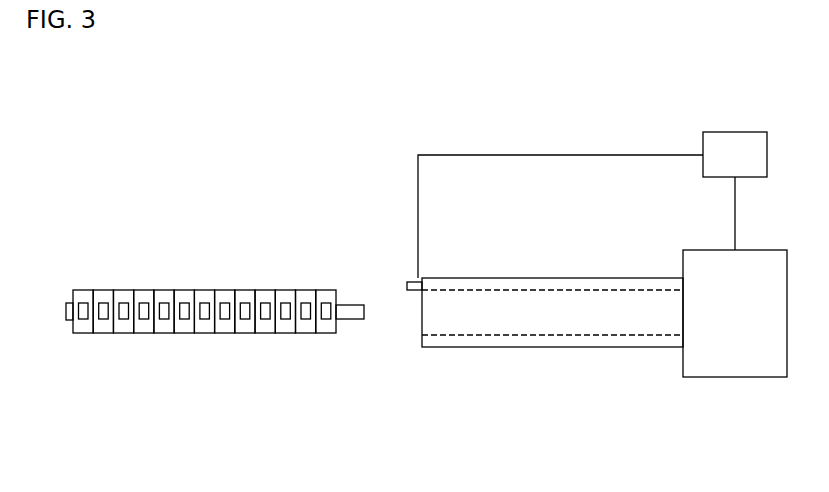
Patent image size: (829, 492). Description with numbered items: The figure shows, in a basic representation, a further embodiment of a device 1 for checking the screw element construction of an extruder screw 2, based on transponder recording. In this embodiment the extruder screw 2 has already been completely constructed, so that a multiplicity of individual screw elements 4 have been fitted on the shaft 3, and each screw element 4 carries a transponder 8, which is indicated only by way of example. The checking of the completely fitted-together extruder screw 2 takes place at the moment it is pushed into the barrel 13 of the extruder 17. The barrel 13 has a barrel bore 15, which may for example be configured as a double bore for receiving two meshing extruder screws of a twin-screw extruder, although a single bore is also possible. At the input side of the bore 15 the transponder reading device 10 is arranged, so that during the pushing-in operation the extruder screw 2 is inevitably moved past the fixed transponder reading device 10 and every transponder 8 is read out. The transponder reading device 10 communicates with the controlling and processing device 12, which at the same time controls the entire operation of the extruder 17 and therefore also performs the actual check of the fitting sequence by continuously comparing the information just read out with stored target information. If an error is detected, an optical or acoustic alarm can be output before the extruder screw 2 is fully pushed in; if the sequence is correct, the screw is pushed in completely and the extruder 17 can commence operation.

The device 1 is at (312, 134).
The extruder screw 2 is at (175, 259).
The shaft 3 is at (70, 322).
The screw elements 4 is at (182, 333).
The transponder 8 is at (314, 319).
The transponder reading device 10 is at (412, 281).
The controlling and processing device 12 is at (730, 132).
The barrel 13 is at (583, 347).
The barrel bore 15 is at (480, 317).
The extruder 17 is at (643, 400).